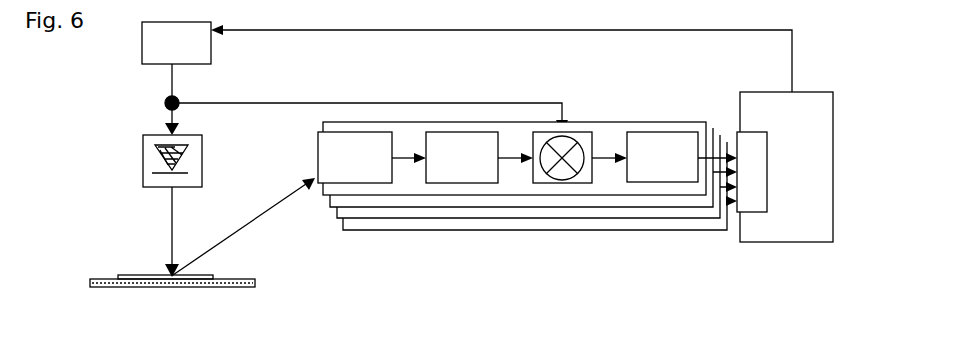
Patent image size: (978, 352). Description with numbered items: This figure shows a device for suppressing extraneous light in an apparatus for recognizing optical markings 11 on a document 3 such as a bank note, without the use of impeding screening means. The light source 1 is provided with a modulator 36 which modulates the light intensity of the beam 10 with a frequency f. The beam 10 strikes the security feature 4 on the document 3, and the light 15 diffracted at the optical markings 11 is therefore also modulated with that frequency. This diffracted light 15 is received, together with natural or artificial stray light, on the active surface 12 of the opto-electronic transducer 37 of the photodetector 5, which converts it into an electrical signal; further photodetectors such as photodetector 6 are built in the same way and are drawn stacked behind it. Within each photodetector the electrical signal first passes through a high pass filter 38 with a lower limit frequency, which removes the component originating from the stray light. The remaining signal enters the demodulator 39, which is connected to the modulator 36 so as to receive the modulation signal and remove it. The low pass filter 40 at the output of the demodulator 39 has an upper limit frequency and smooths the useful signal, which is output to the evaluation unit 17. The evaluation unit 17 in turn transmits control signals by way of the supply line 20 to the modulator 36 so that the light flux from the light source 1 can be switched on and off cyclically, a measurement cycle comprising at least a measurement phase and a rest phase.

The light source 1 is at (143, 170).
The document 3 is at (208, 287).
The security feature 4 is at (207, 275).
The photodetector 5 is at (323, 194).
The photodetector 6 is at (330, 203).
The beam 10 is at (166, 229).
The optical markings 11 is at (158, 272).
The active surface 12 is at (308, 150).
The diffracted light 15 is at (221, 238).
The evaluation unit 17 is at (819, 126).
The supply line 20 is at (792, 72).
The modulator 36 is at (211, 48).
The opto-electronic transducer 37 is at (360, 132).
The high pass filter 38 is at (462, 135).
The demodulator 39 is at (575, 132).
The low pass filter 40 is at (645, 132).